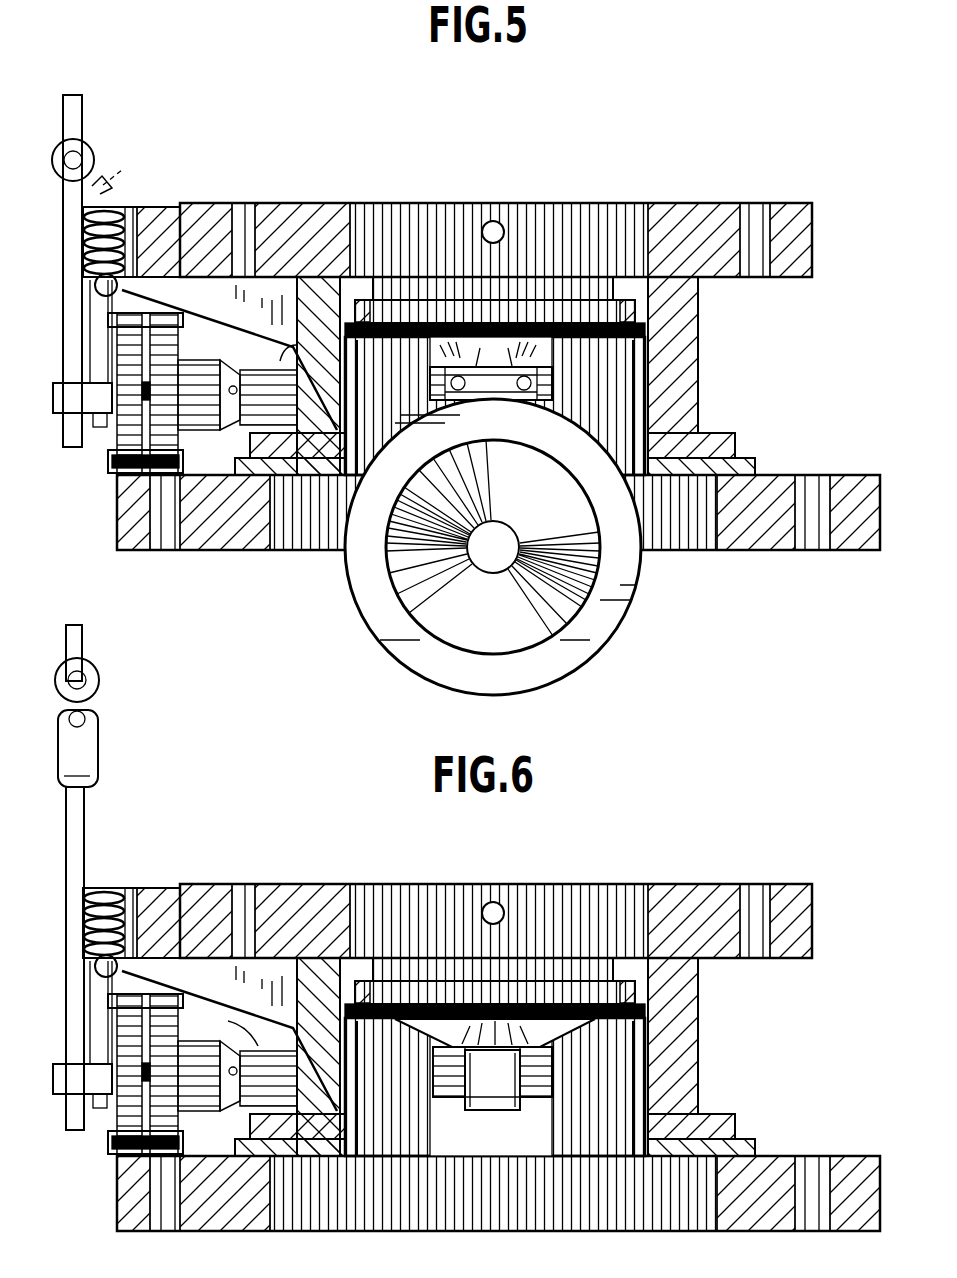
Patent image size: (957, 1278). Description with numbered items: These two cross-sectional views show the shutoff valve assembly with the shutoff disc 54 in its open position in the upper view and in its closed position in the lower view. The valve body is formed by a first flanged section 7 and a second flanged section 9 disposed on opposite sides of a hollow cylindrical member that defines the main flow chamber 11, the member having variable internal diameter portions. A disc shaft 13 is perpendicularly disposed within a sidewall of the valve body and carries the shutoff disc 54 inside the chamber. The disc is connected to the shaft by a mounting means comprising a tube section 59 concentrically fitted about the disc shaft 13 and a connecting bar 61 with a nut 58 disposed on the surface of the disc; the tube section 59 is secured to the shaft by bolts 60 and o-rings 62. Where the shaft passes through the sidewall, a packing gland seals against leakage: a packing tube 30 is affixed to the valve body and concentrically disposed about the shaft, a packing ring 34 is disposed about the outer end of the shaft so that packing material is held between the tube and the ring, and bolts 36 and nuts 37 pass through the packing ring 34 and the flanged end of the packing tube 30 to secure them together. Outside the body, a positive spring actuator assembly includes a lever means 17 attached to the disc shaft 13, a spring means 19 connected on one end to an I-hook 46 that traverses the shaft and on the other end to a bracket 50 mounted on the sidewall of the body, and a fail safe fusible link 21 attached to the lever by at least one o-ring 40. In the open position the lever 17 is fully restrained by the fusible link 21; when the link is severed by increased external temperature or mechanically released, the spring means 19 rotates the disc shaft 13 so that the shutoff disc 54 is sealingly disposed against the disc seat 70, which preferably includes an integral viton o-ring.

In FIG. 5, the first flanged section 7 is at (720, 204).
In FIG. 6, the first flanged section 7 is at (496, 905).
In FIG. 5, the second flanged section 9 is at (833, 475).
In FIG. 6, the second flanged section 9 is at (498, 1165).
In FIG. 5, the main flow chamber 11 is at (702, 368).
In FIG. 6, the main flow chamber 11 is at (701, 1057).
In FIG. 5, the disc shaft 13 is at (56, 415).
In FIG. 6, the disc shaft 13 is at (82, 1063).
In FIG. 5, the lever means 17 is at (85, 110).
In FIG. 6, the lever means 17 is at (100, 865).
In FIG. 5, the spring means 19 is at (125, 212).
In FIG. 6, the spring means 19 is at (131, 910).
In FIG. 5, the fusible link 21 is at (126, 172).
In FIG. 6, the fusible link 21 is at (104, 748).
In FIG. 5, the packing tube 30 is at (306, 345).
In FIG. 6, the packing tube 30 is at (224, 1025).
In FIG. 5, the packing ring 34 is at (173, 366).
In FIG. 6, the packing ring 34 is at (207, 1057).
In FIG. 5, the bolts 36 is at (106, 470).
In FIG. 6, the bolts 36 is at (120, 1167).
In FIG. 5, the nuts 37 is at (183, 318).
In FIG. 6, the nuts 37 is at (169, 1074).
In FIG. 5, the o-ring 40 is at (96, 154).
In FIG. 6, the o-ring 40 is at (107, 680).
In FIG. 5, the I-hook 46 is at (229, 343).
In FIG. 6, the I-hook 46 is at (229, 1024).
In FIG. 5, the bracket 50 is at (273, 301).
In FIG. 6, the bracket 50 is at (248, 1005).
In FIG. 5, the shutoff disc 54 is at (642, 605).
In FIG. 6, the shutoff disc 54 is at (495, 986).
In FIG. 6, the nut 58 is at (492, 1102).
In FIG. 5, the tube section 59 is at (496, 370).
In FIG. 5, the bolts 60 is at (546, 372).
In FIG. 6, the connecting bar 61 is at (498, 1094).
In FIG. 5, the o-rings 62 is at (554, 376).
In FIG. 6, the o-rings 62 is at (495, 1057).
In FIG. 5, the disc seat 70 is at (636, 308).
In FIG. 6, the disc seat 70 is at (544, 995).